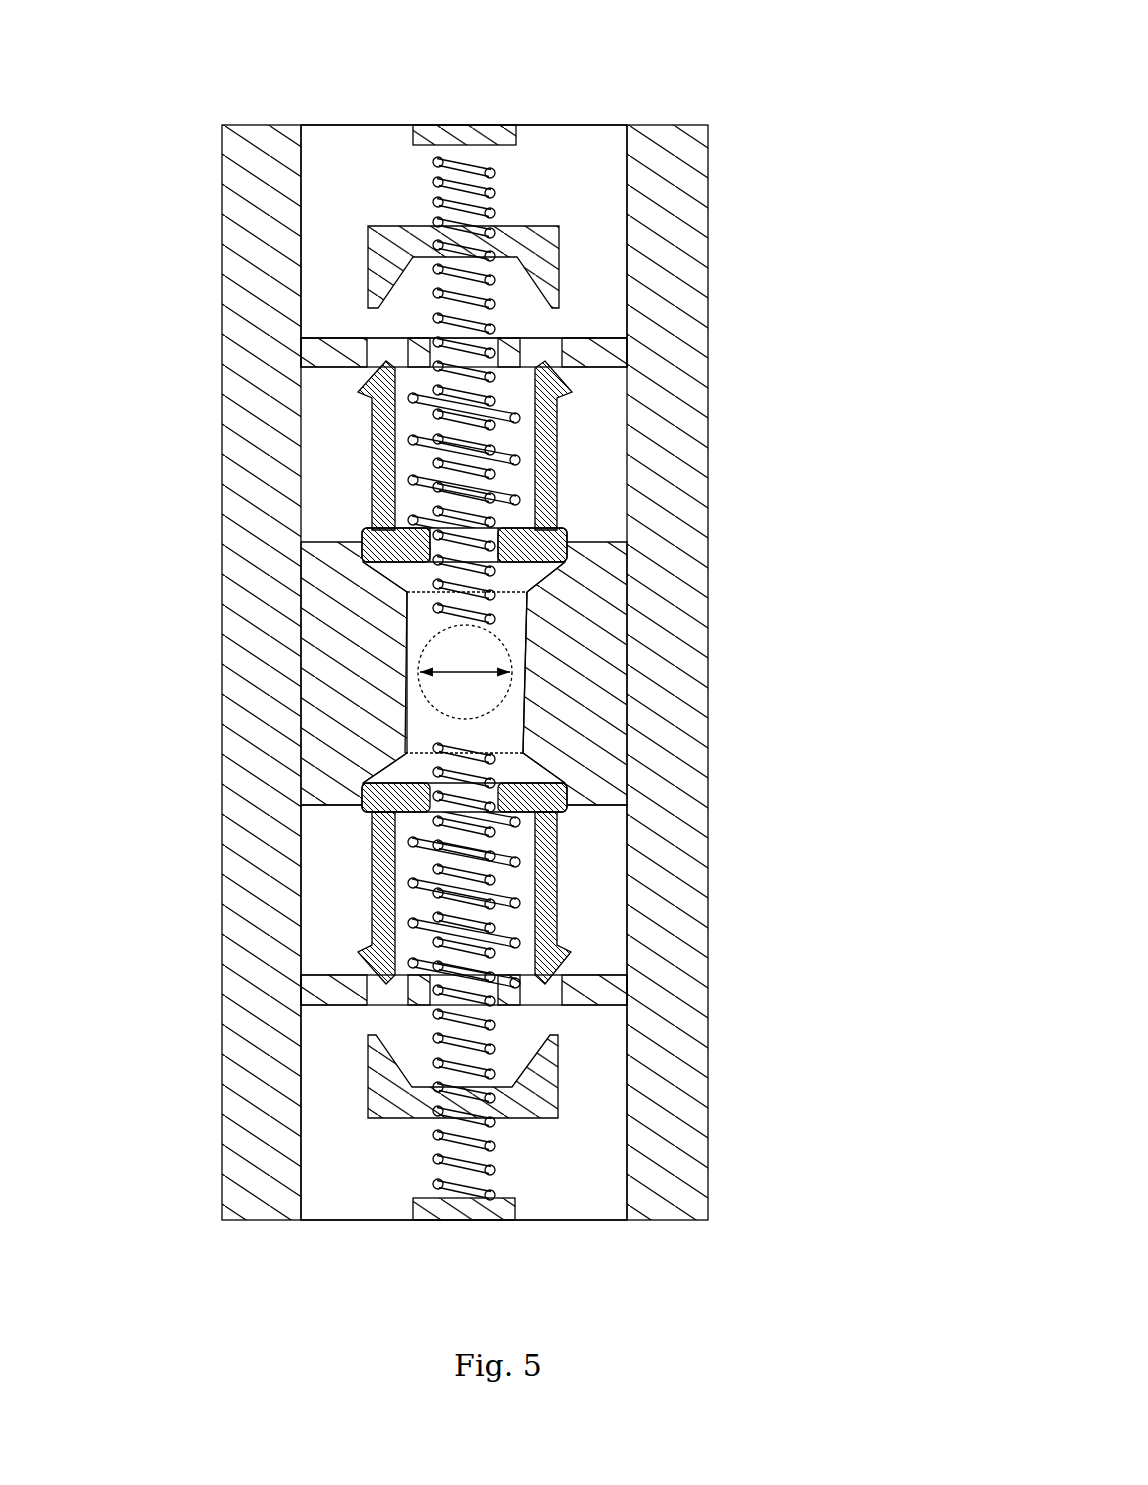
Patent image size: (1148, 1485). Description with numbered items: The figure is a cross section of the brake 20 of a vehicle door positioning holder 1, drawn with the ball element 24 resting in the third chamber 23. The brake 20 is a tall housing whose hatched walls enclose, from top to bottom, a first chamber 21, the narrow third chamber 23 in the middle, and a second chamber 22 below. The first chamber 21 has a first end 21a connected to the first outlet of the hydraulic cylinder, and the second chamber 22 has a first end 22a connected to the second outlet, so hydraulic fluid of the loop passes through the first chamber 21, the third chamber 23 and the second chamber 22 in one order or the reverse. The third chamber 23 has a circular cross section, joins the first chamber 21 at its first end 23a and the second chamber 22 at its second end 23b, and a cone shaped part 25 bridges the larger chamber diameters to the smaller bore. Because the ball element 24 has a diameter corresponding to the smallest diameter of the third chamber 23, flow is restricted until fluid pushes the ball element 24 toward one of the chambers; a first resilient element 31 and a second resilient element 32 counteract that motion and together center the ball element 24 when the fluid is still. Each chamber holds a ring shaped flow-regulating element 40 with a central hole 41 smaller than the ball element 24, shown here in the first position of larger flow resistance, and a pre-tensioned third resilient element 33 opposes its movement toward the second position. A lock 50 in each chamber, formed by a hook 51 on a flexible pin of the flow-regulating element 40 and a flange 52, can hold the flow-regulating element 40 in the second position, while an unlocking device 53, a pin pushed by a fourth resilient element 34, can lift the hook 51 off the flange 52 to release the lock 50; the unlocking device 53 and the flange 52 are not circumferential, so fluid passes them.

The vehicle door positioning holder 1 is at (593, 672).
The brake 20 is at (533, 619).
The first chamber 21 is at (384, 317).
The first end of the first chamber 21a is at (484, 79).
The second chamber 22 is at (357, 1012).
The first end of the second chamber 22a is at (464, 1270).
The third chamber 23 is at (334, 672).
The first end of the third chamber 23a is at (334, 633).
The second end of the third chamber 23b is at (319, 755).
The ball element 24 is at (599, 672).
The cone shaped part 25 is at (447, 730).
The first resilient element 31 is at (338, 509).
The second resilient element 32 is at (647, 739).
The third resilient element 33 is at (637, 701).
The fourth resilient element 34 is at (486, 676).
The flow-regulating element 40 is at (634, 682).
The central hole 41 is at (668, 523).
The lock 50 is at (635, 438).
The hook 51 is at (644, 683).
The flange 52 is at (565, 644).
The unlocking device 53 is at (630, 730).